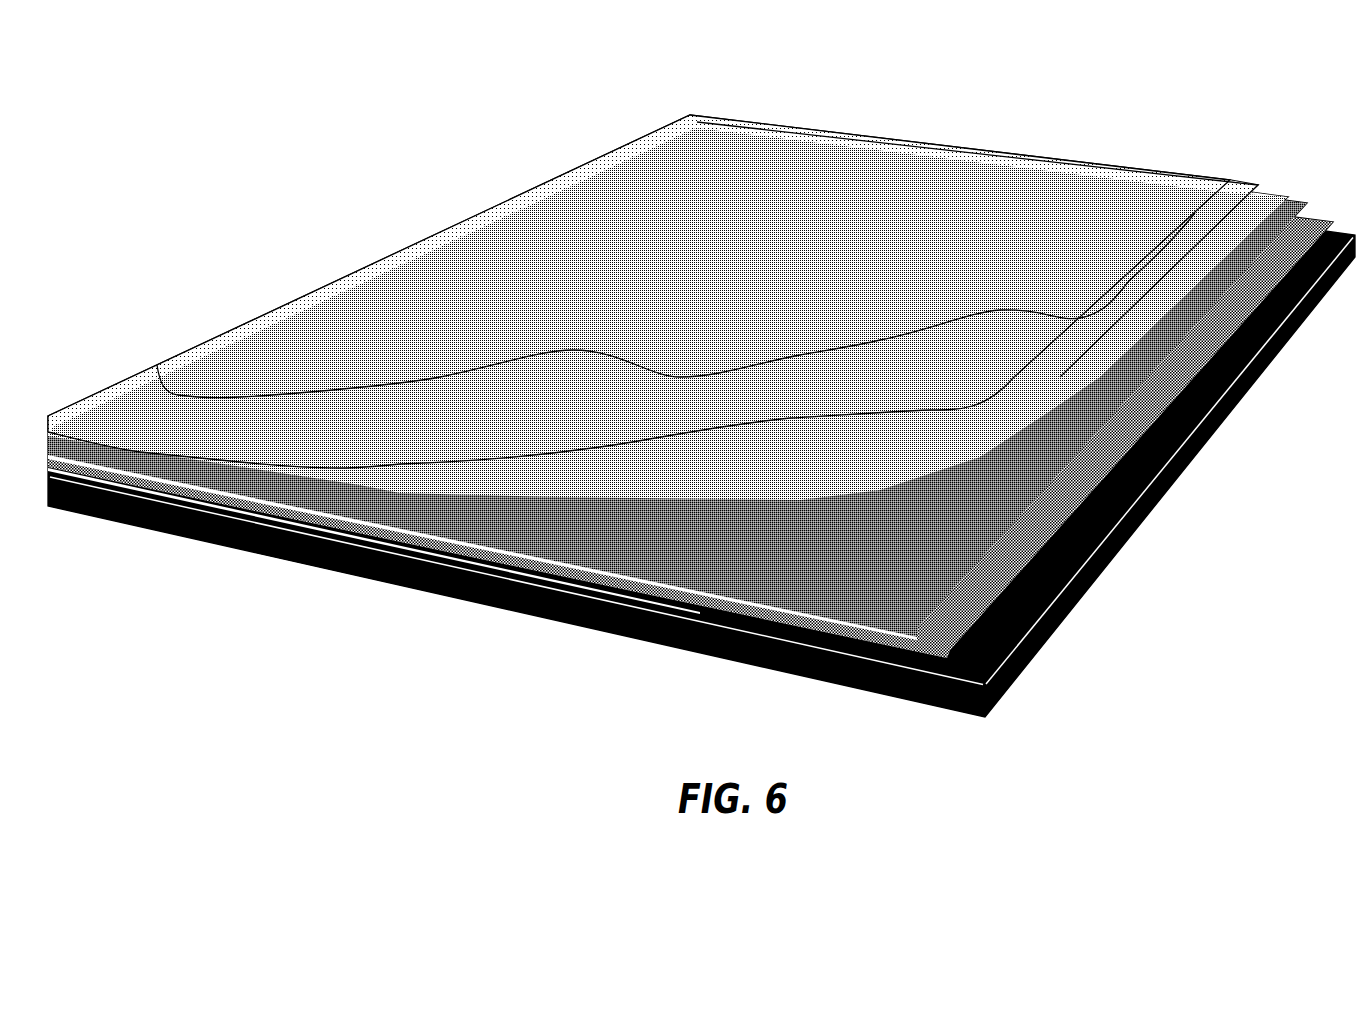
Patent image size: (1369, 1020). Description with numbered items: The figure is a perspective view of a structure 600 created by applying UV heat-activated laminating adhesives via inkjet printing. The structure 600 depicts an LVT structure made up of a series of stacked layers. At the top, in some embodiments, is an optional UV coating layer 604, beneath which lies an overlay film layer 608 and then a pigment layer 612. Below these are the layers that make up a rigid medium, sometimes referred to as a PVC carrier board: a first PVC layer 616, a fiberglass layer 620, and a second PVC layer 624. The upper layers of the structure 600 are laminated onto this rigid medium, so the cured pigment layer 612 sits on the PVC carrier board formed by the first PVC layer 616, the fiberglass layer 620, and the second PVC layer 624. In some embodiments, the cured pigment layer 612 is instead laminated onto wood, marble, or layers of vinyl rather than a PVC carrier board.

The structure 600 is at (258, 131).
The UV coating layer 604 is at (412, 303).
The overlay film layer 608 is at (878, 368).
The pigment layer 612 is at (1190, 270).
The first PVC layer 616 is at (153, 518).
The fiberglass layer 620 is at (314, 519).
The second PVC layer 624 is at (543, 527).